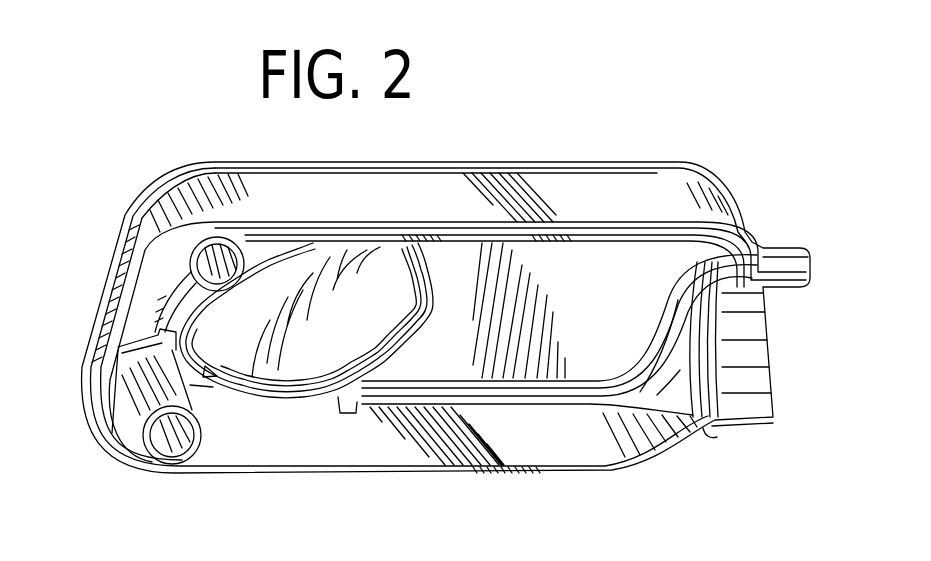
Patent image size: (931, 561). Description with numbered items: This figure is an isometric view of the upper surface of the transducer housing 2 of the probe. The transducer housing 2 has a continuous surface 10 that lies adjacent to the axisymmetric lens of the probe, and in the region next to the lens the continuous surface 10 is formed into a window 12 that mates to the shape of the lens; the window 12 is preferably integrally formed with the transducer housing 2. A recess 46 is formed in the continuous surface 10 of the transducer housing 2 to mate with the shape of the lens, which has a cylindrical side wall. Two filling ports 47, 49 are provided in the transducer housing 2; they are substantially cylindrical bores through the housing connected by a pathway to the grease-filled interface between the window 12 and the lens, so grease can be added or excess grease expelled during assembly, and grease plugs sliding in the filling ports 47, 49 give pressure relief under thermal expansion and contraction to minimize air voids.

The transducer housing 2 is at (578, 190).
The continuous surface 10 is at (306, 288).
The window 12 is at (338, 282).
The recess 46 is at (318, 392).
The filling port 47 is at (226, 262).
The filling port 49 is at (176, 430).